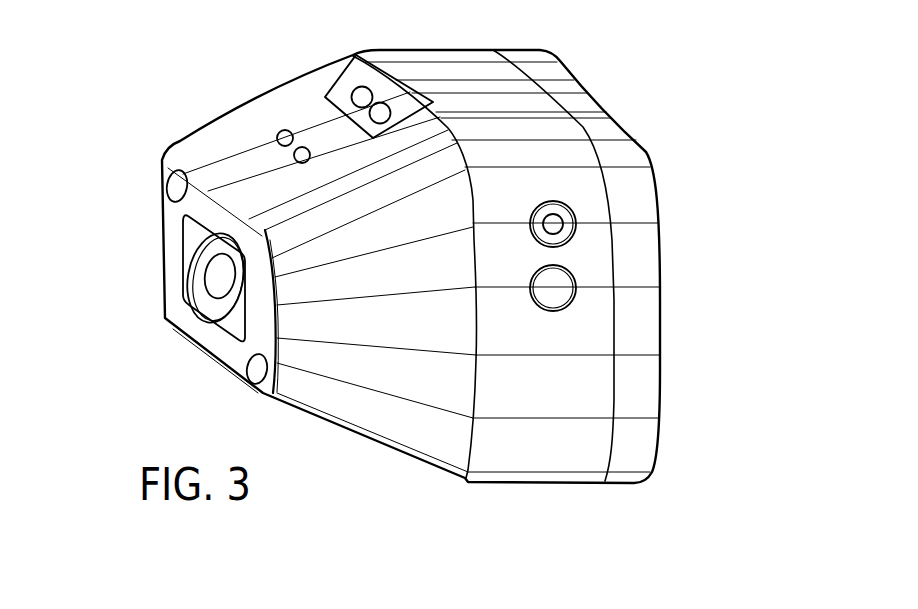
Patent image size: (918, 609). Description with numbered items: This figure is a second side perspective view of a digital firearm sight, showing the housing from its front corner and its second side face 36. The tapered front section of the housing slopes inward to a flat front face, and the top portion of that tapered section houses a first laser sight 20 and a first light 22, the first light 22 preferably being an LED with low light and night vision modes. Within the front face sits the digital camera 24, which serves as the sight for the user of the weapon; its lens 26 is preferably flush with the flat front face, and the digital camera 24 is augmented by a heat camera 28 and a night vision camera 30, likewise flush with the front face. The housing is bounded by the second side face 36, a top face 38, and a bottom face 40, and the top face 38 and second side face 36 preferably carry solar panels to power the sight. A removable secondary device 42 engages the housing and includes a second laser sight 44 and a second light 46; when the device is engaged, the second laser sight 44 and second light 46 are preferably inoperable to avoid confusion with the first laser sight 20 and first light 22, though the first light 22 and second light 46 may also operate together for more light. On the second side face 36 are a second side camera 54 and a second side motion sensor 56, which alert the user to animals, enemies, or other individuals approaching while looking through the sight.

The first laser sight 20 is at (284, 137).
The first light 22 is at (301, 154).
The digital camera 24 is at (198, 293).
The lens 26 is at (215, 277).
The heat camera 28 is at (258, 373).
The night vision camera 30 is at (174, 188).
The second side face 36 is at (568, 345).
The top face 38 is at (567, 122).
The bottom face 40 is at (239, 0).
The removable secondary device 42 is at (537, 95).
The second laser sight 44 is at (362, 97).
The second light 46 is at (380, 113).
The second side camera 54 is at (573, 212).
The second side motion sensor 56 is at (577, 288).